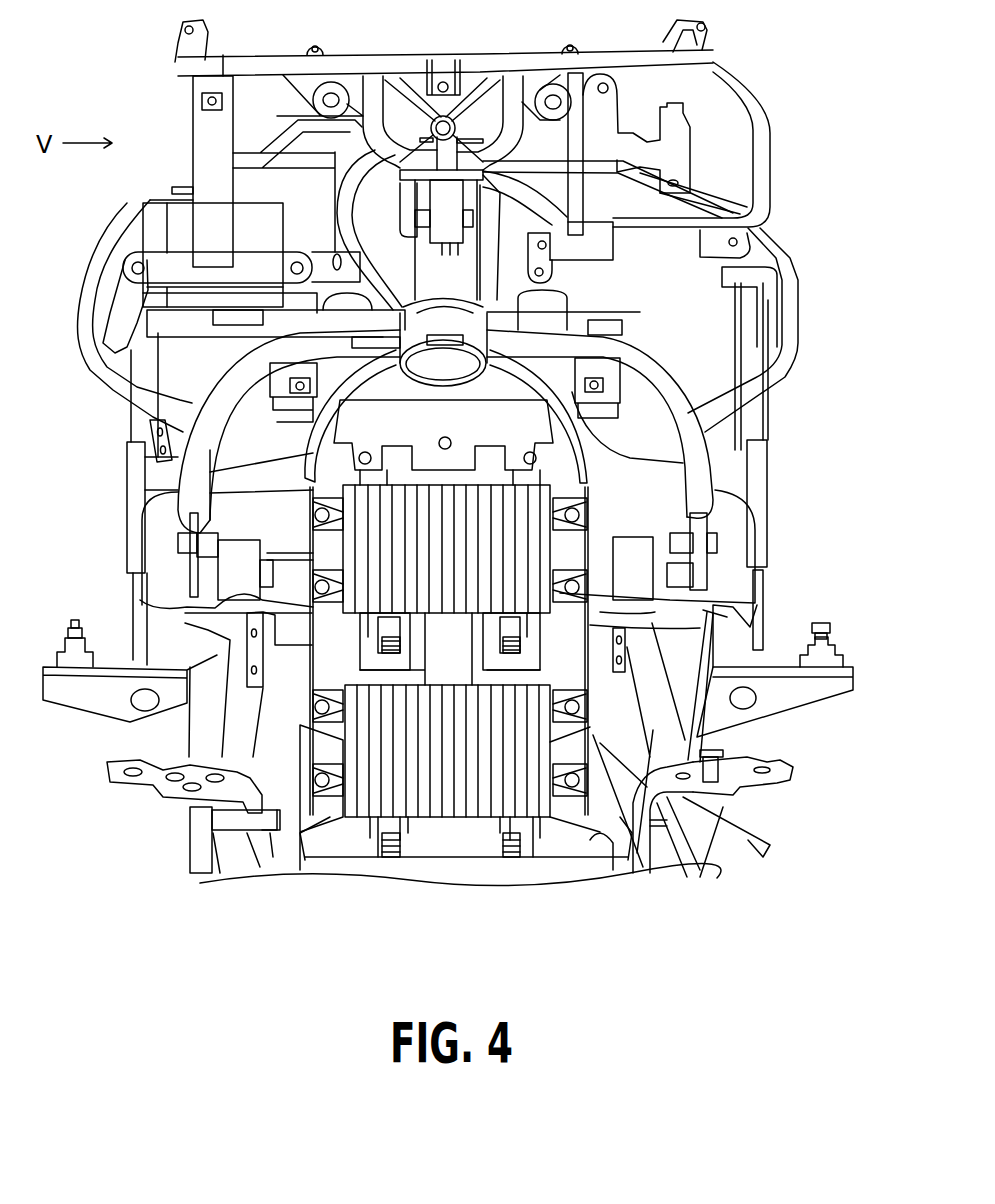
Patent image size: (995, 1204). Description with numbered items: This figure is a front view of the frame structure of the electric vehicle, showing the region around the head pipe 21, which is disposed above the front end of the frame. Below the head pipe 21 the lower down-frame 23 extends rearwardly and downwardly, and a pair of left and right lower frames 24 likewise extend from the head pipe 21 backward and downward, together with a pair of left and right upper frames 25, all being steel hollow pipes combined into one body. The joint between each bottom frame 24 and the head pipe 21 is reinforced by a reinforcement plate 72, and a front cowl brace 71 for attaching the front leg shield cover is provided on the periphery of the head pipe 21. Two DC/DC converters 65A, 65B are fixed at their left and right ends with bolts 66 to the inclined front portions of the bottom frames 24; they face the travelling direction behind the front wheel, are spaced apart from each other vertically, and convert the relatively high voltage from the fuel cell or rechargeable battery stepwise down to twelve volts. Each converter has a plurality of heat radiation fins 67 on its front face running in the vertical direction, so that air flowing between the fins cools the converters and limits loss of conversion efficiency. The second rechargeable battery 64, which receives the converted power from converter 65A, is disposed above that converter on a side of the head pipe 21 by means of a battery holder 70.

The head pipe 21 is at (455, 278).
The lower down-frame 23 is at (453, 670).
The lower frame 24 is at (332, 633).
The upper frame 25 is at (148, 555).
The second rechargeable battery 64 is at (262, 220).
The DC/DC converter 65A is at (560, 488).
The DC/DC converter 65B is at (508, 778).
The bolt 66 is at (310, 575).
The heat radiation fin 67 is at (522, 565).
The battery holder 70 is at (178, 272).
The front cowl brace 71 is at (377, 68).
The reinforcement plate 72 is at (512, 322).